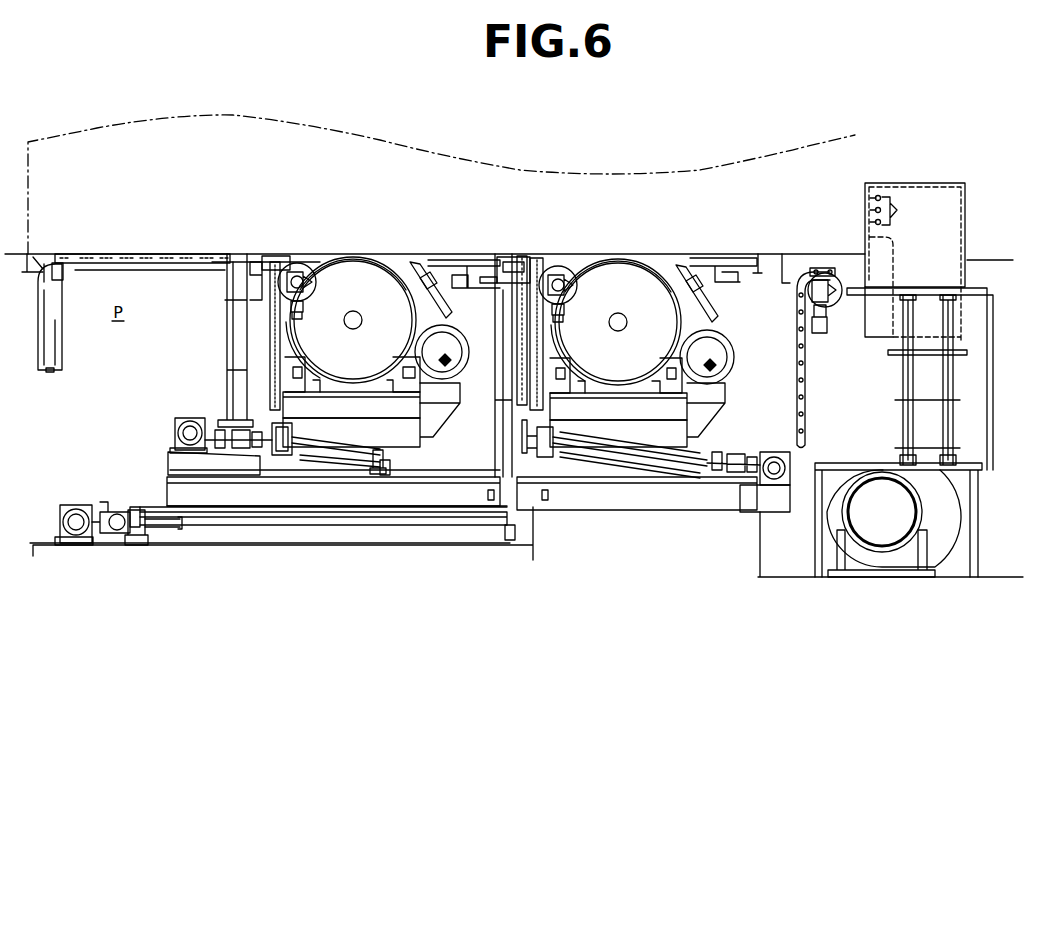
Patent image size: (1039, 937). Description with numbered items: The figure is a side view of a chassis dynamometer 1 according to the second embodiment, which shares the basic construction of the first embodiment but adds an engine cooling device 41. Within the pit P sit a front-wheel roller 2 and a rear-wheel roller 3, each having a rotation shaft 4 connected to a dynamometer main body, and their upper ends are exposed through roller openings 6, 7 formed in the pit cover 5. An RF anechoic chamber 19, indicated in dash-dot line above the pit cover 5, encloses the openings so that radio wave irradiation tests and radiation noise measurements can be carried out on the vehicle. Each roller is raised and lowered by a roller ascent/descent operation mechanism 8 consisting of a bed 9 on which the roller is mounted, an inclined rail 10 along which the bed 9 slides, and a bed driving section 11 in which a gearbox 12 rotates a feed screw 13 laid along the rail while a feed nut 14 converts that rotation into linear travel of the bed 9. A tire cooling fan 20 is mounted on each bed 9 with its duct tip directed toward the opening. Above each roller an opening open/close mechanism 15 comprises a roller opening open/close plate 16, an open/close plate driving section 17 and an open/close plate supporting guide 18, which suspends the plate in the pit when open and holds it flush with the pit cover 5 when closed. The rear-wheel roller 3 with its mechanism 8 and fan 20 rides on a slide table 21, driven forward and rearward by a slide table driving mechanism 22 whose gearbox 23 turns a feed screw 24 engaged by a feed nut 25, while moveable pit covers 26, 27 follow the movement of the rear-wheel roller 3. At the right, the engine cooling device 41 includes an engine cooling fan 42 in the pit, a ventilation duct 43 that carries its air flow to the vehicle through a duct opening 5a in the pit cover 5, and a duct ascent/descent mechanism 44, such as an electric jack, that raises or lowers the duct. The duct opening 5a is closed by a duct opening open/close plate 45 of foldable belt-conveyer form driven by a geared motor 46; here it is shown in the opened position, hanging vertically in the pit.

The chassis dynamometer 1 is at (168, 372).
The front-wheel roller 2 is at (622, 320).
The rear-wheel roller 3 is at (372, 310).
The rotation shaft 4 is at (411, 260).
The pit cover 5 is at (733, 256).
The duct opening 5a is at (865, 262).
The roller opening 6 is at (632, 293).
The roller opening 7 is at (372, 285).
The roller ascent/descent operation mechanism 8 is at (238, 632).
The bed 9 is at (395, 433).
The inclined rail 10 is at (347, 470).
The bed driving section 11 is at (195, 598).
The gearbox 12 is at (193, 443).
The feed screw 13 is at (322, 447).
The feed nut 14 is at (285, 443).
The opening open/close mechanism 15 is at (210, 181).
The roller opening open/close plate 16 is at (267, 318).
The open/close plate driving section 17 is at (278, 293).
The open/close plate supporting guide 18 is at (311, 258).
The RF anechoic chamber 19 is at (59, 150).
The tire cooling fan 20 is at (442, 343).
The slide table 21 is at (180, 530).
The slide table driving mechanism 22 is at (45, 596).
The gearbox 23 is at (77, 524).
The feed screw 24 is at (156, 522).
The feed nut 25 is at (123, 522).
The moveable pit cover 26 is at (122, 254).
The moveable pit cover 27 is at (517, 267).
The engine cooling device 41 is at (840, 358).
The engine cooling fan 42 is at (938, 480).
The ventilation duct 43 is at (903, 372).
The duct ascent/descent mechanism 44 is at (910, 410).
The duct opening open/close plate 45 is at (797, 371).
The geared motor 46 is at (813, 278).